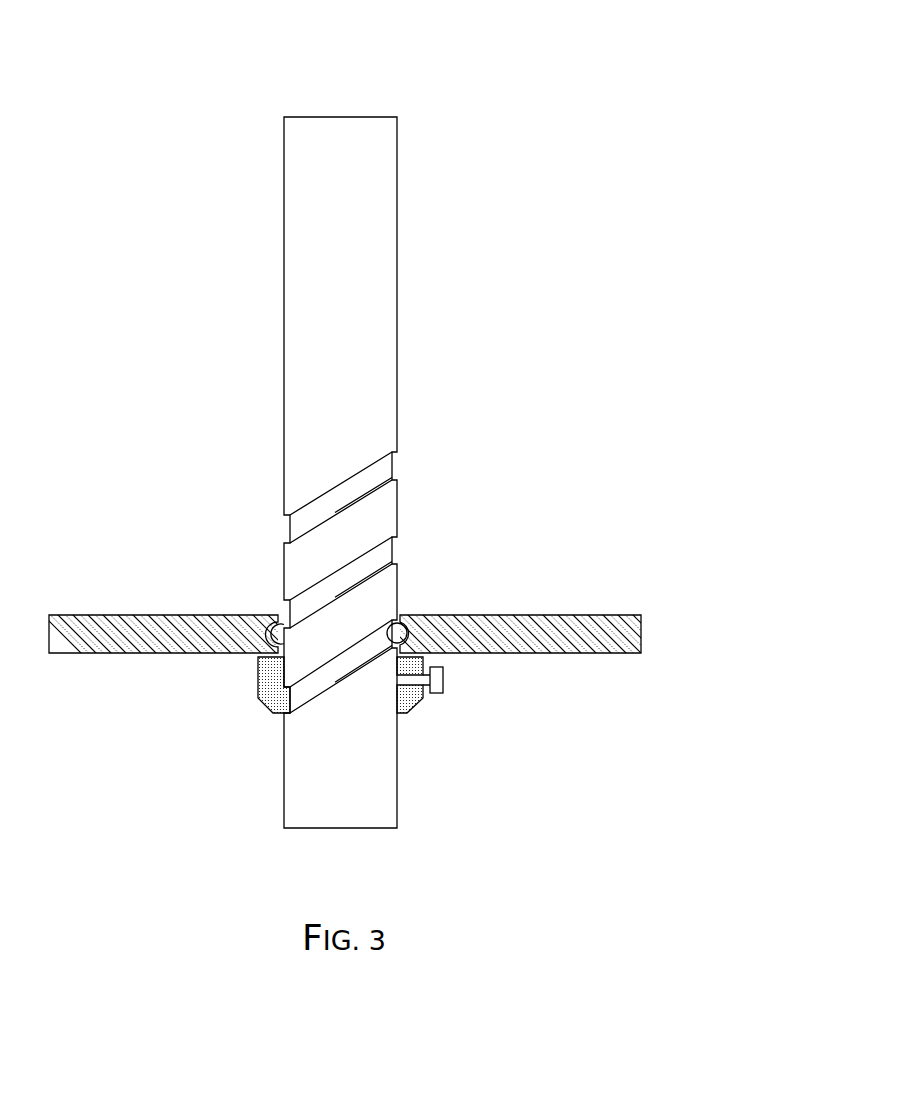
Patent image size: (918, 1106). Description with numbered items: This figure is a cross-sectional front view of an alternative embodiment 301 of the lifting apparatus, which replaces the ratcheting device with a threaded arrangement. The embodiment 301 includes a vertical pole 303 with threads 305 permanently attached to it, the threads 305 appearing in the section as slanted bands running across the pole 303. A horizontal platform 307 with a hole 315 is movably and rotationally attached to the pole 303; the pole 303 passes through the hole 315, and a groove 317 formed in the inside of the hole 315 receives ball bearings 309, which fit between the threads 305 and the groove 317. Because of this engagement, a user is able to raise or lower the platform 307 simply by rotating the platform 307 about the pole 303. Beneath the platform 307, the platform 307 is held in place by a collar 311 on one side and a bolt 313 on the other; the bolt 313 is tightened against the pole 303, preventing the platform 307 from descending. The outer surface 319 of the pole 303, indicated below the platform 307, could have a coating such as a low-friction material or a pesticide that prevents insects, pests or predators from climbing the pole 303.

The embodiment 301 is at (106, 62).
The pole 303 is at (284, 315).
The threads 305 is at (397, 478).
The platform 307 is at (142, 615).
The ball bearings 309 is at (408, 622).
The collar 311 is at (258, 680).
The bolt 313 is at (443, 683).
The hole 315 is at (277, 618).
The groove 317 is at (272, 637).
The outer surface 319 is at (405, 766).